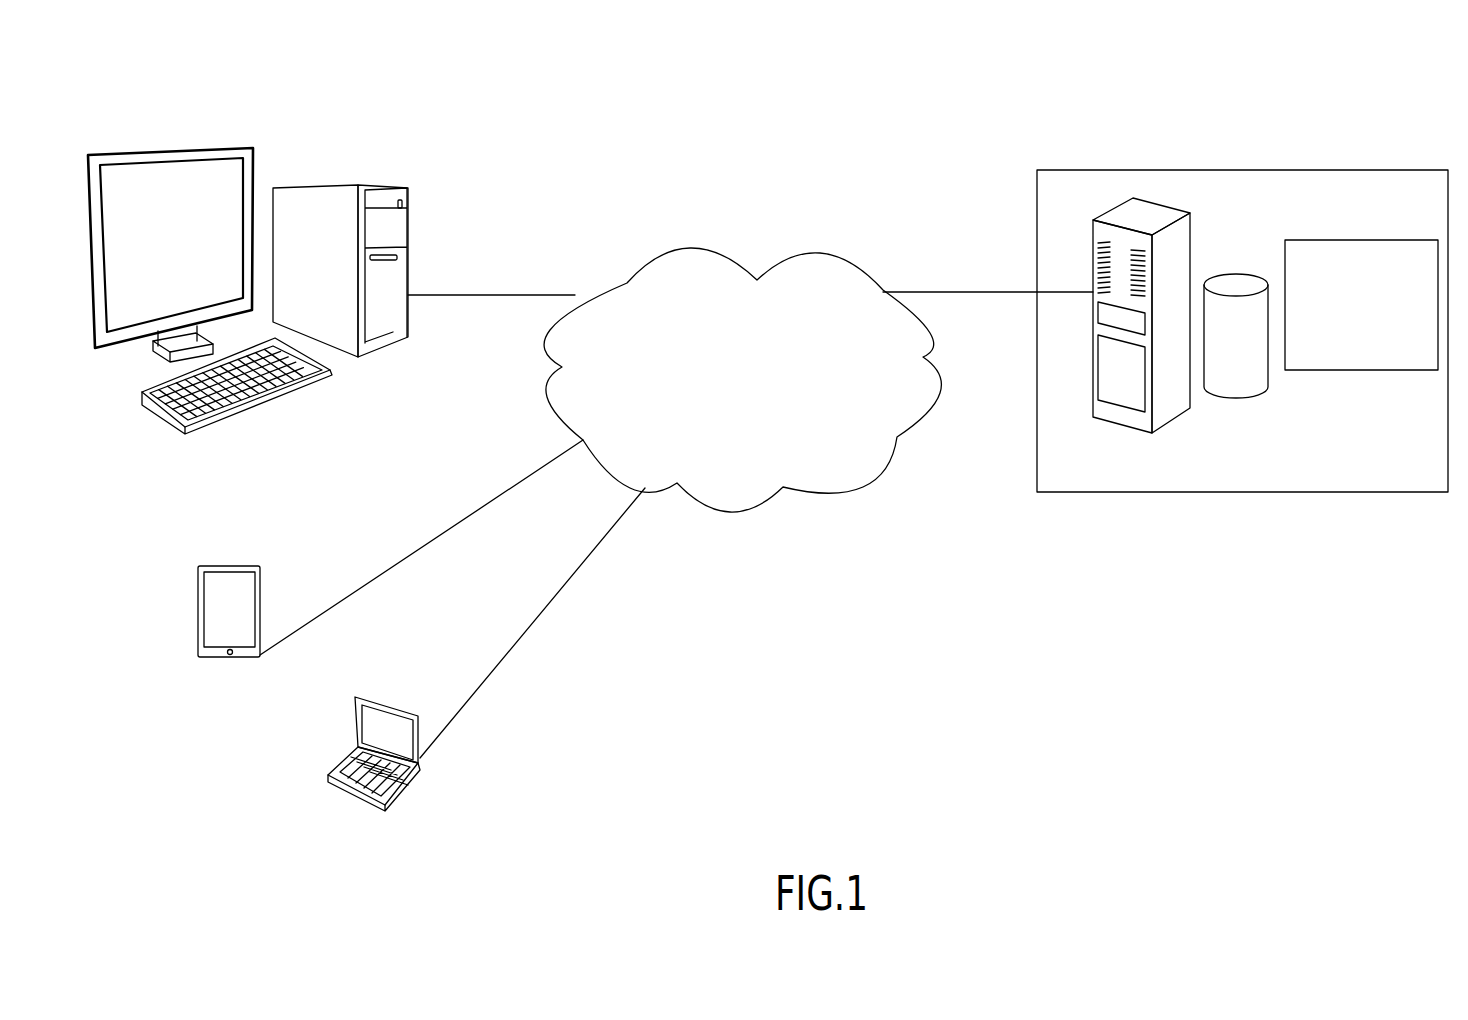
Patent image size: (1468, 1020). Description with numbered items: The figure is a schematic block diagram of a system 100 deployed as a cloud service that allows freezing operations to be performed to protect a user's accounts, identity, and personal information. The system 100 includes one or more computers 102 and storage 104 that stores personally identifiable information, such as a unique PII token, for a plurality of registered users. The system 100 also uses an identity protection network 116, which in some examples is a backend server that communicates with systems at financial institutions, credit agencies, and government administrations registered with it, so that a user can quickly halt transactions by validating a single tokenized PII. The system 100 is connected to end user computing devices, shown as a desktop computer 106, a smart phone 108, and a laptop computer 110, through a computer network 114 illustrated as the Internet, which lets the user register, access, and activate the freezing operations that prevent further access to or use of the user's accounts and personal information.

The system 100 is at (1211, 99).
The computer 102 is at (1168, 217).
The storage 104 is at (1230, 277).
The desktop computer 106 is at (173, 99).
The smart phone 108 is at (237, 563).
The laptop computer 110 is at (397, 710).
The computer network 114 is at (771, 152).
The identity protection network 116 is at (1335, 372).